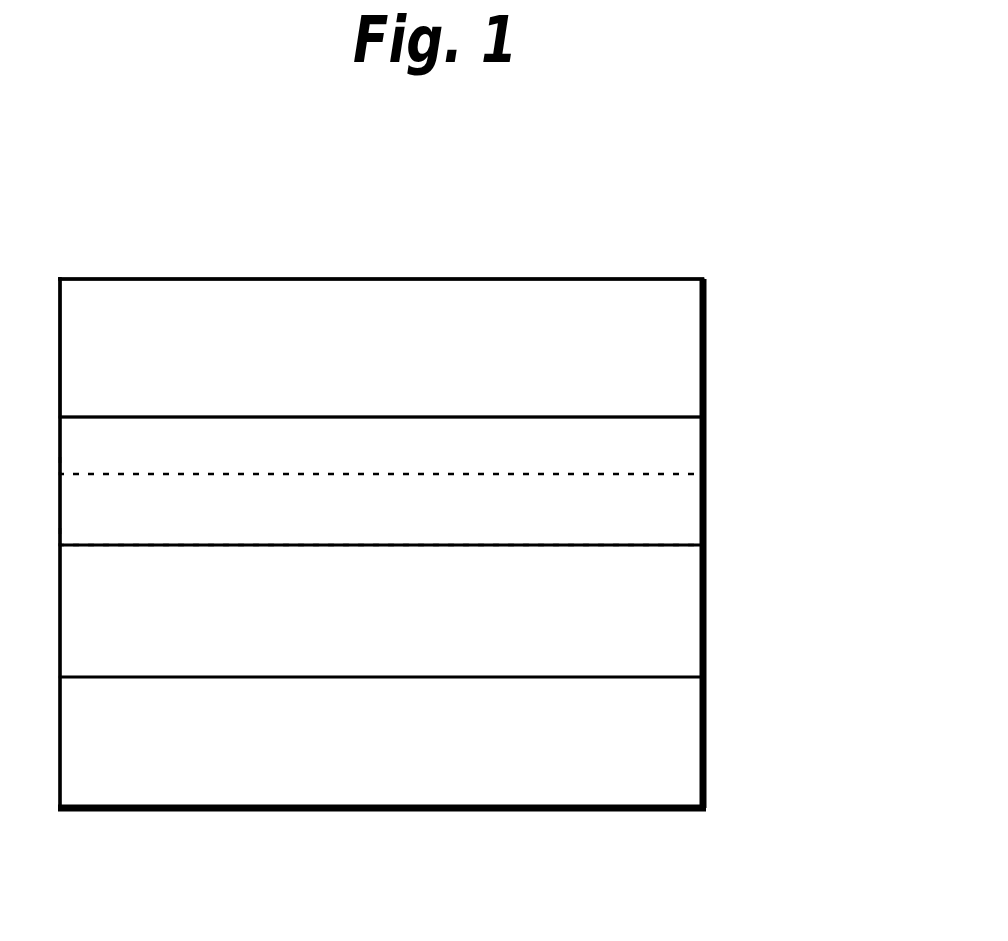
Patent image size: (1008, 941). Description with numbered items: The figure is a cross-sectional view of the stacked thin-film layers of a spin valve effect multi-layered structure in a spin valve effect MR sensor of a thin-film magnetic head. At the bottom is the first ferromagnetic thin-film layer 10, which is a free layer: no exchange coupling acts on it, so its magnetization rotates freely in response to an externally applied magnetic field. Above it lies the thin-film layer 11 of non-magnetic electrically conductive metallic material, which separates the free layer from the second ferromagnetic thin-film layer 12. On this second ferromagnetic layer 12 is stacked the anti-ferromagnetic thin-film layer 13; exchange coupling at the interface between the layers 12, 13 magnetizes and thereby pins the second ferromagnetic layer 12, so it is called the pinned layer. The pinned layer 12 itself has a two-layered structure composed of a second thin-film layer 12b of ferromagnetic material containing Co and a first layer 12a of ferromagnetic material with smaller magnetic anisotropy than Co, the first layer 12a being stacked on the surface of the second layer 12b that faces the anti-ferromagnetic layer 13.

The first ferromagnetic thin-film layer 10 is at (703, 757).
The non-magnetic electrically conductive metallic thin-film layer 11 is at (703, 620).
The second ferromagnetic thin-film layer 12 is at (490, 486).
The first layer 12a is at (663, 453).
The second thin-film layer 12b is at (663, 518).
The anti-ferromagnetic thin-film layer 13 is at (703, 362).